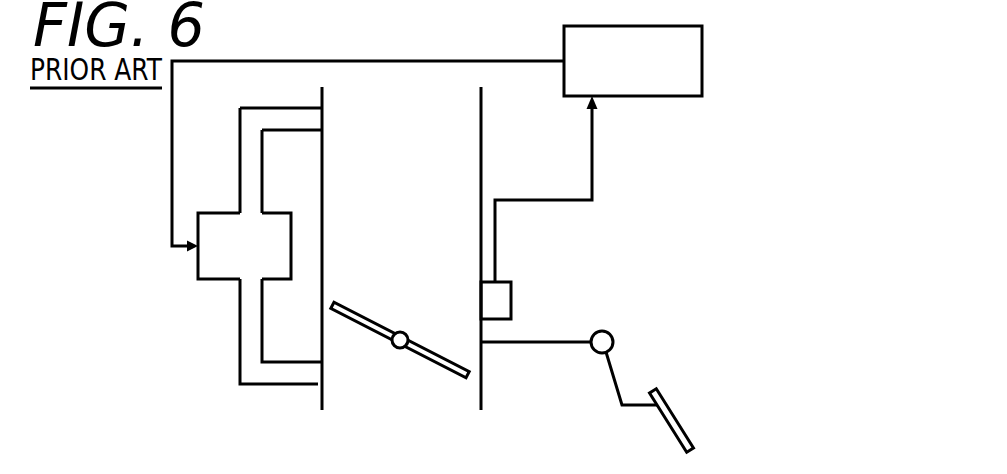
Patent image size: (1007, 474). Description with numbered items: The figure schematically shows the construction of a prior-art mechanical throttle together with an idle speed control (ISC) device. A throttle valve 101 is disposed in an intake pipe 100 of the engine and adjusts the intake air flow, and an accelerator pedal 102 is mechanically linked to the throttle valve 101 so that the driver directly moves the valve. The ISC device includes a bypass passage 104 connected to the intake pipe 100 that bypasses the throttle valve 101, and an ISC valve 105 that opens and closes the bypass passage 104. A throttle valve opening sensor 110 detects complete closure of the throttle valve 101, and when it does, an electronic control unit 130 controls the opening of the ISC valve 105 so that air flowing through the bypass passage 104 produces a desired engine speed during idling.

The intake pipe 100 is at (481, 150).
The throttle valve 101 is at (430, 363).
The accelerator pedal 102 is at (677, 413).
The bypass passage 104 is at (277, 385).
The ISC valve 105 is at (213, 280).
The throttle valve opening sensor 110 is at (504, 282).
The electronic control unit 130 is at (652, 97).